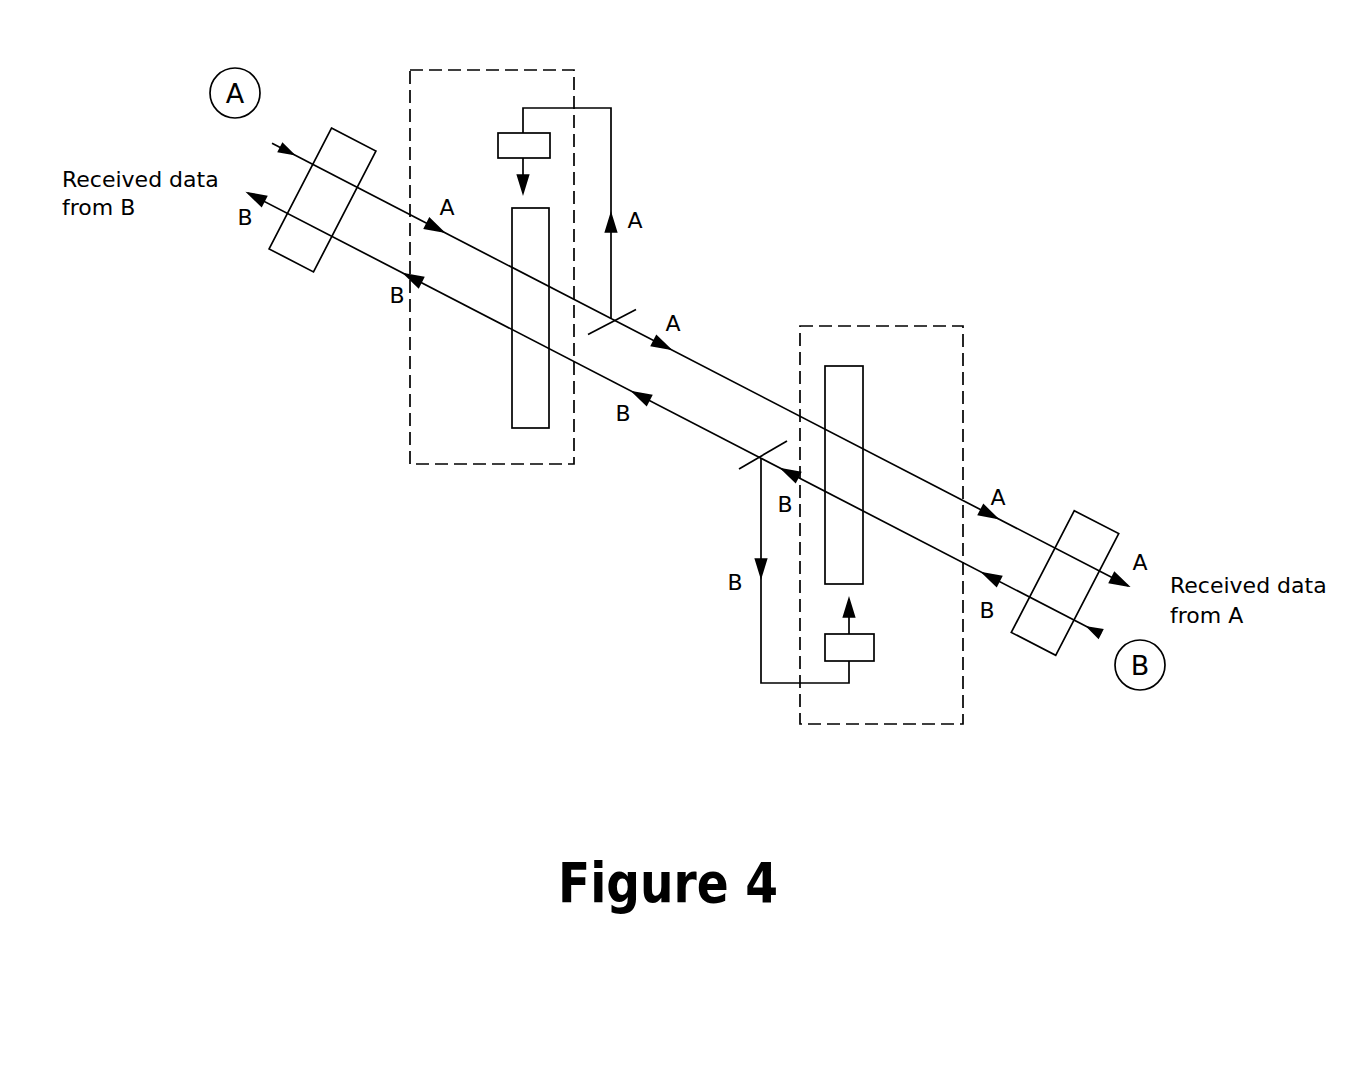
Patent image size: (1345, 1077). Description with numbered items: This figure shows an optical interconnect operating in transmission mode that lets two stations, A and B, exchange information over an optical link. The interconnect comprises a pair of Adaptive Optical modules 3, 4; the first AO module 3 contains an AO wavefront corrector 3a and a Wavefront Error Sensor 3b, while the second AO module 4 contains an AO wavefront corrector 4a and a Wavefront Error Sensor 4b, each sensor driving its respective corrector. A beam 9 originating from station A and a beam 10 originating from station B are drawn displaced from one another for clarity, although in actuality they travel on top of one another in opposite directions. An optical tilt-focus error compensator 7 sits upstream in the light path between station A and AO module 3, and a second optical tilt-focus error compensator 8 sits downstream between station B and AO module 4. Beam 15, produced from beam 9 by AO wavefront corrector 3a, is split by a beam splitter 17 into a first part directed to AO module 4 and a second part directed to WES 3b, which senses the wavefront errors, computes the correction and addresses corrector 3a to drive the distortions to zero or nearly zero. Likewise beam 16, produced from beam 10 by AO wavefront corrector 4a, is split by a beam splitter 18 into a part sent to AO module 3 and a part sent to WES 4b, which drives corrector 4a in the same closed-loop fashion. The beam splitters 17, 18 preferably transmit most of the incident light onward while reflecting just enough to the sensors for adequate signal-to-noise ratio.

The Adaptive Optical module 3 is at (513, 236).
The AO wavefront corrector 3a is at (512, 410).
The Wavefront Error Sensor 3b is at (512, 133).
The Adaptive Optical module 4 is at (860, 556).
The AO wavefront corrector 4a is at (862, 366).
The Wavefront Error Sensor 4b is at (869, 634).
The optical tilt-focus error compensator 7 is at (350, 128).
The optical tilt-focus error compensator 8 is at (1093, 509).
The beam 9 is at (383, 195).
The beam 10 is at (1010, 590).
The beam 15 is at (713, 370).
The beam 16 is at (687, 421).
The beam splitter 17 is at (615, 318).
The beam splitter 18 is at (759, 459).